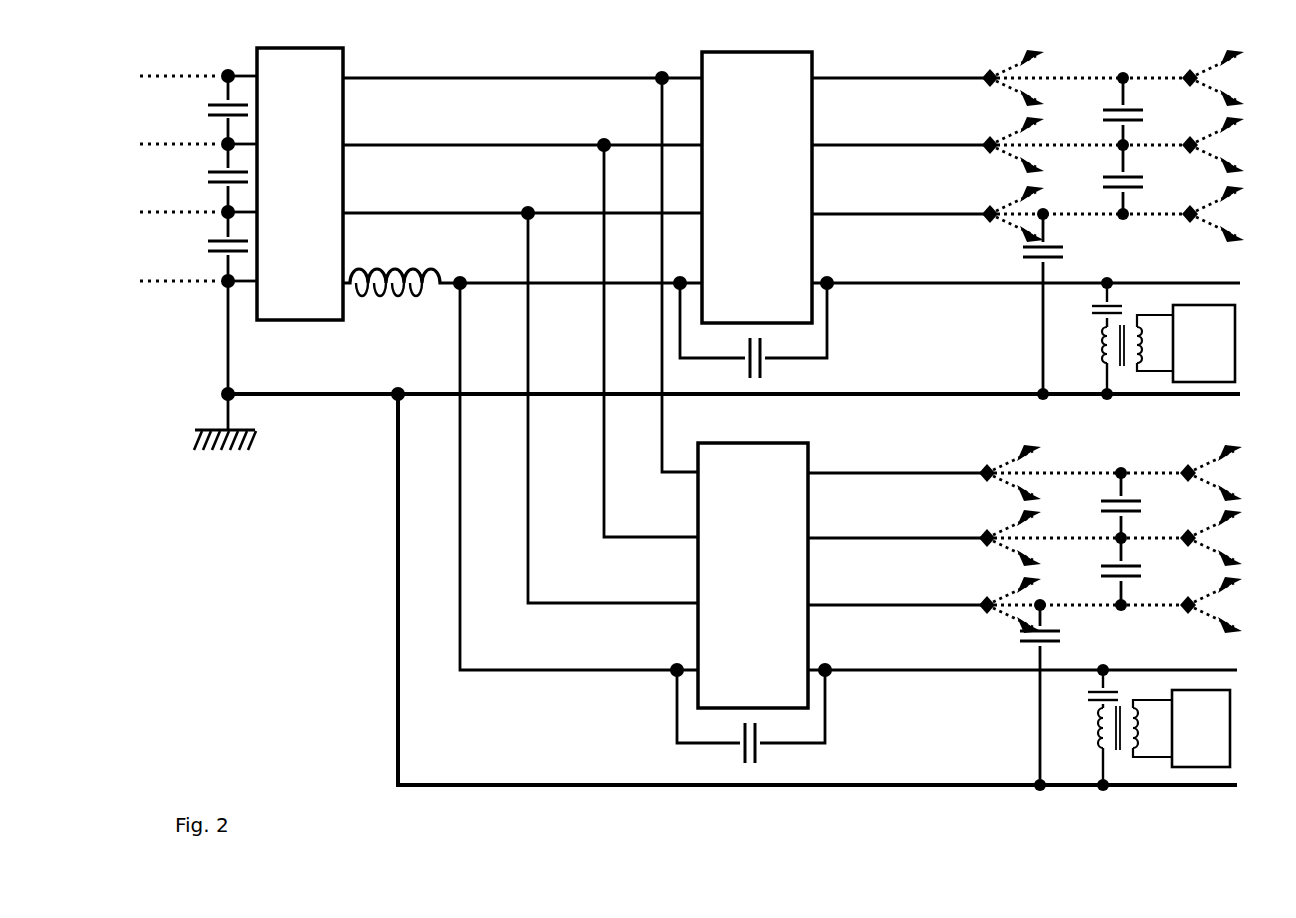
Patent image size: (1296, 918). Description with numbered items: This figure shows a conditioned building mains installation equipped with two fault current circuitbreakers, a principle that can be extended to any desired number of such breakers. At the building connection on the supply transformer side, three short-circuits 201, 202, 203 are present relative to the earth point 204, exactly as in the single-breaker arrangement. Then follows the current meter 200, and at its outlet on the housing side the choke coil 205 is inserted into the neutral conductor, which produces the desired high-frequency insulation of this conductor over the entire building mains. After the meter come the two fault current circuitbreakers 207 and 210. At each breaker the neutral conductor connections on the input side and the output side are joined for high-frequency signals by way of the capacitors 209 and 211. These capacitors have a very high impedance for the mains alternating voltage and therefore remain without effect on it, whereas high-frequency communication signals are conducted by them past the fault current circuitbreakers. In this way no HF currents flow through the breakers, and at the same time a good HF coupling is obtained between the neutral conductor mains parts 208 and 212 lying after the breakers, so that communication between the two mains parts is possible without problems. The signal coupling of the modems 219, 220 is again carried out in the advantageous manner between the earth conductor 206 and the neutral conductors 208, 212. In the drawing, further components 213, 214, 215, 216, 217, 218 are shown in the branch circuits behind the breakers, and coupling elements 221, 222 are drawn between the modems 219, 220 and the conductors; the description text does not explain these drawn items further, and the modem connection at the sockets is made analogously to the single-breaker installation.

The current meter 200 is at (328, 70).
The short-circuit 201 is at (210, 110).
The short-circuit 202 is at (210, 176).
The short-circuit 203 is at (208, 246).
The earth point 204 is at (224, 420).
The choke coil 205 is at (395, 308).
The earth conductor 206 is at (262, 392).
The fault current circuitbreaker 207 is at (798, 68).
The neutral conductor mains part 208 is at (865, 282).
The capacitor 209 is at (765, 364).
The fault current circuitbreaker 210 is at (795, 460).
The capacitor 211 is at (760, 749).
The neutral conductor mains part 212 is at (858, 670).
The capacitor 213 is at (1062, 253).
The capacitor 214 is at (1060, 638).
The capacitor 215 is at (1140, 119).
The capacitor 216 is at (1140, 186).
The capacitor 217 is at (1140, 507).
The capacitor 218 is at (1140, 573).
The modem 219 is at (1202, 372).
The modem 220 is at (1202, 755).
The coupling transformer 221 is at (1121, 366).
The coupling transformer 222 is at (1117, 752).